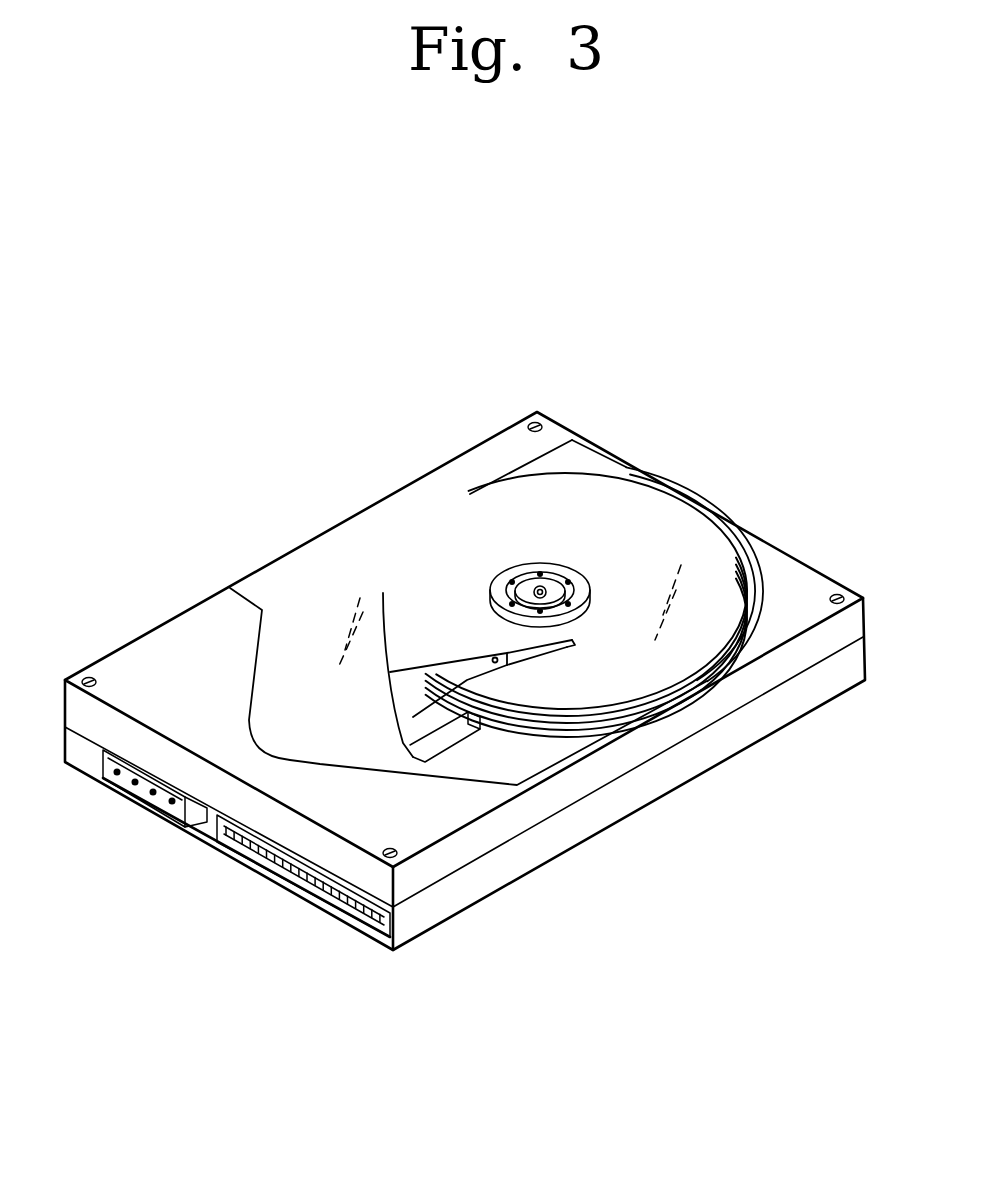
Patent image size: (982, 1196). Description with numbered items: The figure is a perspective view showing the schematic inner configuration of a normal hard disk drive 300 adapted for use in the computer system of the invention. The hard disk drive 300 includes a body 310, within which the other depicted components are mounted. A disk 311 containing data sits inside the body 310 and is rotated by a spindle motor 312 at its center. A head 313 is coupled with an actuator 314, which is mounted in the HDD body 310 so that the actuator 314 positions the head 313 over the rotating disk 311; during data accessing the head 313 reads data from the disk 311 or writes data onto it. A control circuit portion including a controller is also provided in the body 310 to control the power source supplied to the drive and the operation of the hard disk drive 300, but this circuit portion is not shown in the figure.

The hard disk drive 300 is at (722, 336).
The body 310 is at (843, 701).
The disk 311 is at (652, 518).
The spindle motor 312 is at (557, 578).
The head 313 is at (573, 641).
The actuator 314 is at (440, 670).